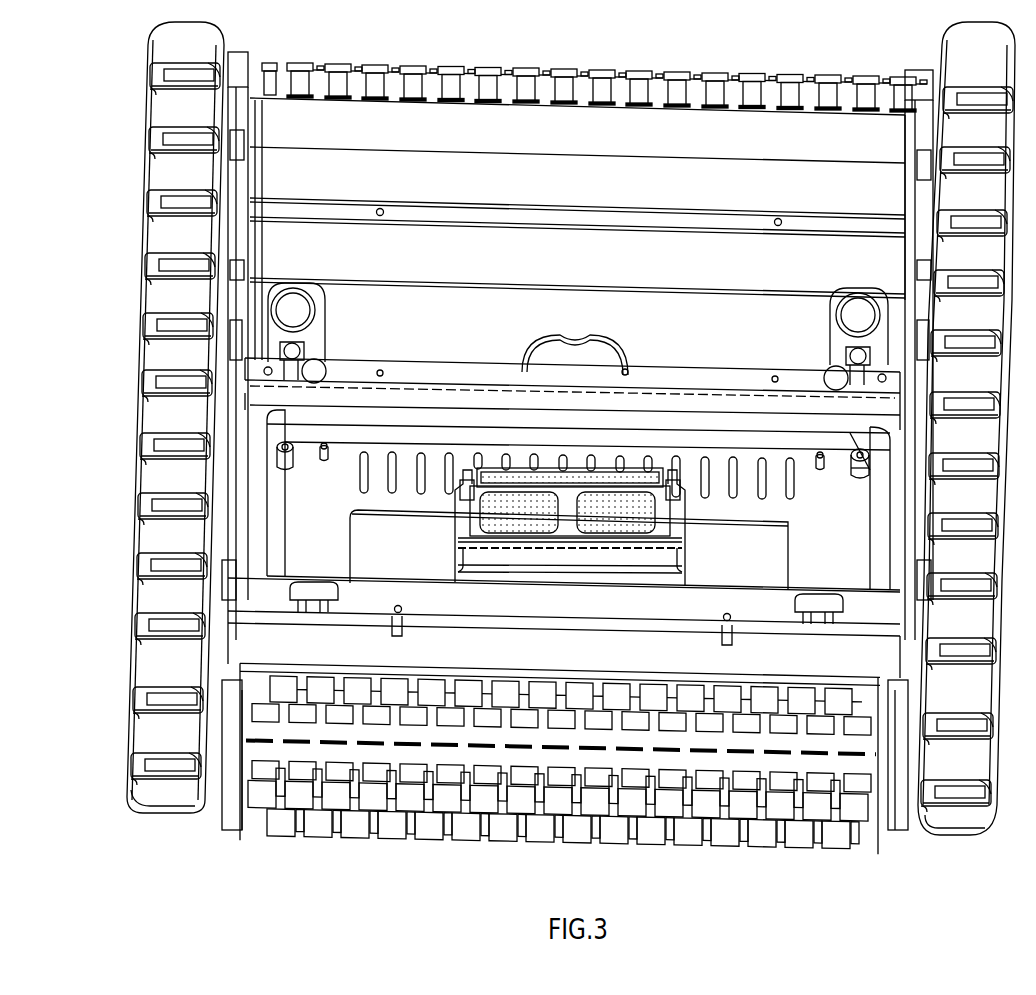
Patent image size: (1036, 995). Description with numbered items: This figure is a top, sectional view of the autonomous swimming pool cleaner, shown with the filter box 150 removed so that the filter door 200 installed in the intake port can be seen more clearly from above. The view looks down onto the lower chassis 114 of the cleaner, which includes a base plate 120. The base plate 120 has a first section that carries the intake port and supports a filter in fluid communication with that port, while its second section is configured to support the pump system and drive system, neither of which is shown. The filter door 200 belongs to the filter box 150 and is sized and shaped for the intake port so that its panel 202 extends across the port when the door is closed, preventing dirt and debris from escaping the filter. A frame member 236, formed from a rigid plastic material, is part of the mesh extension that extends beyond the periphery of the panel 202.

The lower chassis 114 is at (248, 597).
The base plate 120 is at (300, 508).
The filter box 150 is at (453, 551).
The filter door 200 is at (657, 528).
The panel 202 is at (575, 512).
The frame member 236 is at (484, 465).